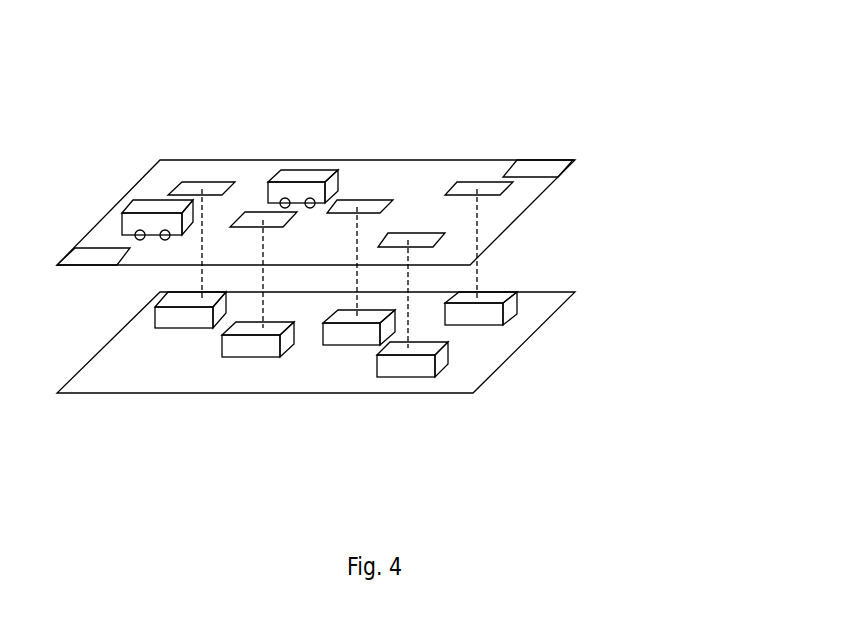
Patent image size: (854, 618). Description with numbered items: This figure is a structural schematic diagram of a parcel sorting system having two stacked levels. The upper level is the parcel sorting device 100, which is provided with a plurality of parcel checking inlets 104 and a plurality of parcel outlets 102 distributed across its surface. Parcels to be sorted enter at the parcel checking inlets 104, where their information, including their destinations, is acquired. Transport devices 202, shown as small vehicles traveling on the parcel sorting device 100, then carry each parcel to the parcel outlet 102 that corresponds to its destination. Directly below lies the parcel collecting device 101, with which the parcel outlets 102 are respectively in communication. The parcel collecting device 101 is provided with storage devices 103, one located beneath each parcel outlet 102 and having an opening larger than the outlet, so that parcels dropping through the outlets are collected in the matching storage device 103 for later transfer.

The parcel sorting device 100 is at (388, 187).
The parcel collecting device 101 is at (548, 307).
The parcel outlet 102 is at (212, 187).
The storage device 103 is at (445, 350).
The parcel checking inlet 104 is at (545, 172).
The transport device 202 is at (183, 207).